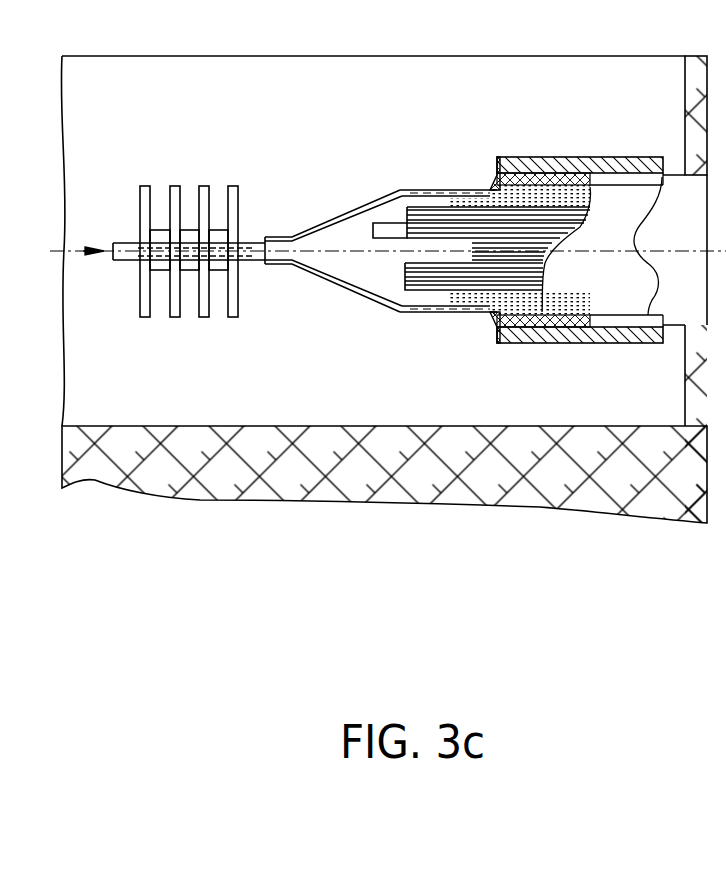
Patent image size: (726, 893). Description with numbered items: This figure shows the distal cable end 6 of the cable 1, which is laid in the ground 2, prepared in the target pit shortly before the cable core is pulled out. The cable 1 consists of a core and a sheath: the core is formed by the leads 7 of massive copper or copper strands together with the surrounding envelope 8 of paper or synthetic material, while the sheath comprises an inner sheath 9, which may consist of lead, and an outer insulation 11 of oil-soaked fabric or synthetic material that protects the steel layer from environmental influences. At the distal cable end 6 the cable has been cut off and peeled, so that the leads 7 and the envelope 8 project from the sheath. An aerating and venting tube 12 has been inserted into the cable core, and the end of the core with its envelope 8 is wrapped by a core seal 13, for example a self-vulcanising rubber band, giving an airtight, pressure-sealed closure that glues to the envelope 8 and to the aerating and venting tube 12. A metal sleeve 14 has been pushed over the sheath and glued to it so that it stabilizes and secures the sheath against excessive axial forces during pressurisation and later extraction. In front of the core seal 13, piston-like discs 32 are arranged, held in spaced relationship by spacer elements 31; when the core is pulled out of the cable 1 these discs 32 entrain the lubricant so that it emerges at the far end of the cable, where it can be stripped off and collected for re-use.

The cable 1 is at (676, 334).
The ground 2 is at (632, 473).
The distal cable end 6 is at (142, 151).
The leads 7 is at (420, 277).
The envelope 8 is at (445, 195).
The inner sheath 9 is at (498, 158).
The insulation 11 is at (560, 162).
The aerating and venting tube 12 is at (123, 262).
The core seal 13 is at (343, 215).
The sleeve 14 is at (497, 342).
The spacer elements 31 is at (222, 227).
The discs 32 is at (153, 318).